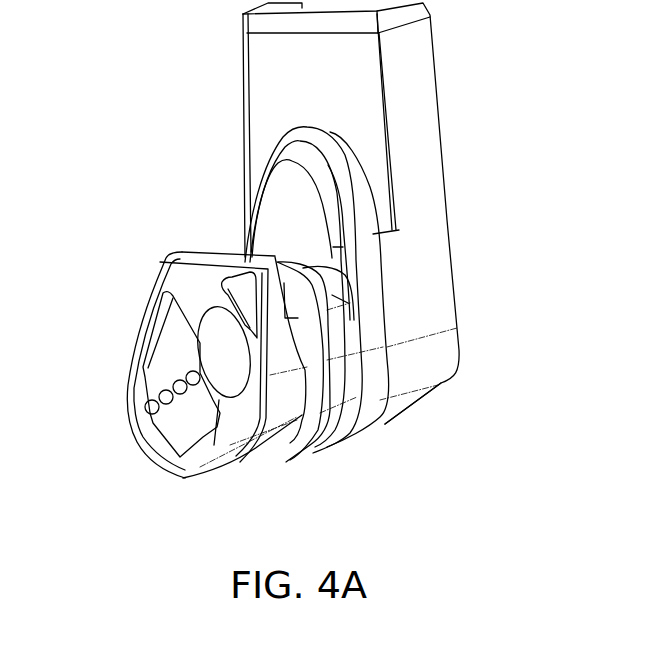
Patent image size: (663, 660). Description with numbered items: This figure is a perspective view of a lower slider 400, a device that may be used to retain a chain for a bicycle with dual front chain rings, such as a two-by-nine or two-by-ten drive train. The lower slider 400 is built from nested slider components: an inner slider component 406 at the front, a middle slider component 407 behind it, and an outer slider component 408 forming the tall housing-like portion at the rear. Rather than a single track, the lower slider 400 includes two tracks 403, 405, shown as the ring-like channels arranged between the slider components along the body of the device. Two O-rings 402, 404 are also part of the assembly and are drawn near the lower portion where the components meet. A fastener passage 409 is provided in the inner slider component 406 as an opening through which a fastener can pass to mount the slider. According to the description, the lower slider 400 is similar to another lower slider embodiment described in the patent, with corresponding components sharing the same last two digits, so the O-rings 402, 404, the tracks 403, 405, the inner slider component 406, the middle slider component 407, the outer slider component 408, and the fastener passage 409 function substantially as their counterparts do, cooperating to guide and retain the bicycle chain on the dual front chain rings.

The lower slider 400 is at (178, 112).
The O-ring 402 is at (253, 467).
The track 403 is at (332, 295).
The O-ring 404 is at (315, 450).
The track 405 is at (376, 186).
The inner slider component 406 is at (153, 378).
The middle slider component 407 is at (290, 202).
The outer slider component 408 is at (413, 70).
The fastener passage 409 is at (217, 467).